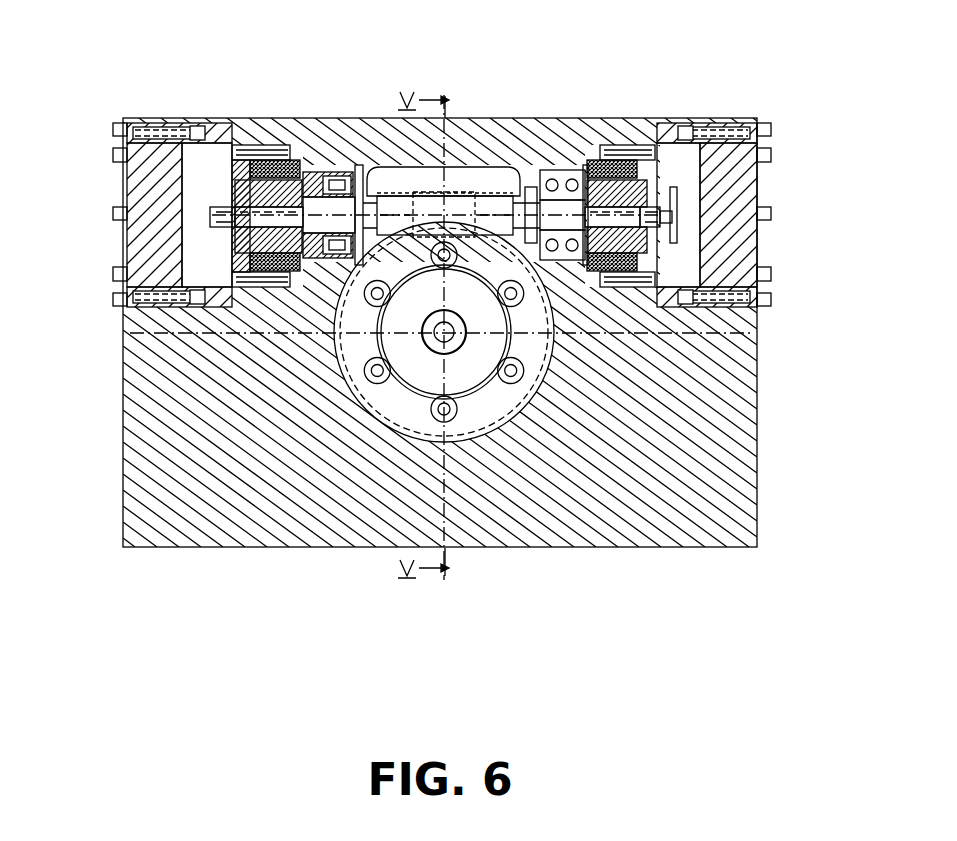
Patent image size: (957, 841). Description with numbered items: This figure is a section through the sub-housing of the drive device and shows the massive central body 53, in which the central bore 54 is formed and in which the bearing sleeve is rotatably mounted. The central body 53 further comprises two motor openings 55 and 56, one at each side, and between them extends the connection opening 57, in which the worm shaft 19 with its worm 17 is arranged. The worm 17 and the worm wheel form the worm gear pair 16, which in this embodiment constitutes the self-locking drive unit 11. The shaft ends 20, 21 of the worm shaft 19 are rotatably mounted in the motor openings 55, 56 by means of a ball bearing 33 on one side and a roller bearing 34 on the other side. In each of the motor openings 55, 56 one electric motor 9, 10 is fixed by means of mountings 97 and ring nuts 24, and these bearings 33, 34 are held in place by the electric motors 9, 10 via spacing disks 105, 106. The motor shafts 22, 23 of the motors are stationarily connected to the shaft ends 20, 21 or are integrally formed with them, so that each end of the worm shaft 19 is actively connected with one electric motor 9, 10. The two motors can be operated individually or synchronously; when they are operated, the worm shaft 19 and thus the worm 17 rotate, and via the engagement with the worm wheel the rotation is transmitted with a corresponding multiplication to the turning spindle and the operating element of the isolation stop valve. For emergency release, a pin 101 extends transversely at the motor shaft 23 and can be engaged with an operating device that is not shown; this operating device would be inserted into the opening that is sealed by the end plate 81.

The electric motor 9 is at (262, 175).
The electric motor 10 is at (620, 205).
The self-locking drive unit 11 is at (455, 183).
The worm gear pair 16 is at (459, 118).
The worm 17 is at (428, 207).
The worm shaft 19 is at (397, 205).
The shaft end 20 is at (322, 230).
The shaft end 21 is at (548, 262).
The motor shaft 22 is at (300, 268).
The motor shaft 23 is at (590, 260).
The ring nut 24 is at (245, 262).
The ball bearing 33 is at (578, 175).
The roller bearing 34 is at (330, 165).
The central body 53 is at (745, 448).
The central bore 54 is at (498, 423).
The motor opening 55 is at (212, 160).
The motor opening 56 is at (665, 140).
The connection opening 57 is at (505, 173).
The end plate 81 is at (133, 197).
The mounting 97 is at (242, 160).
The pin 101 is at (735, 205).
The spacing disk 105 is at (590, 165).
The spacing disk 106 is at (305, 172).